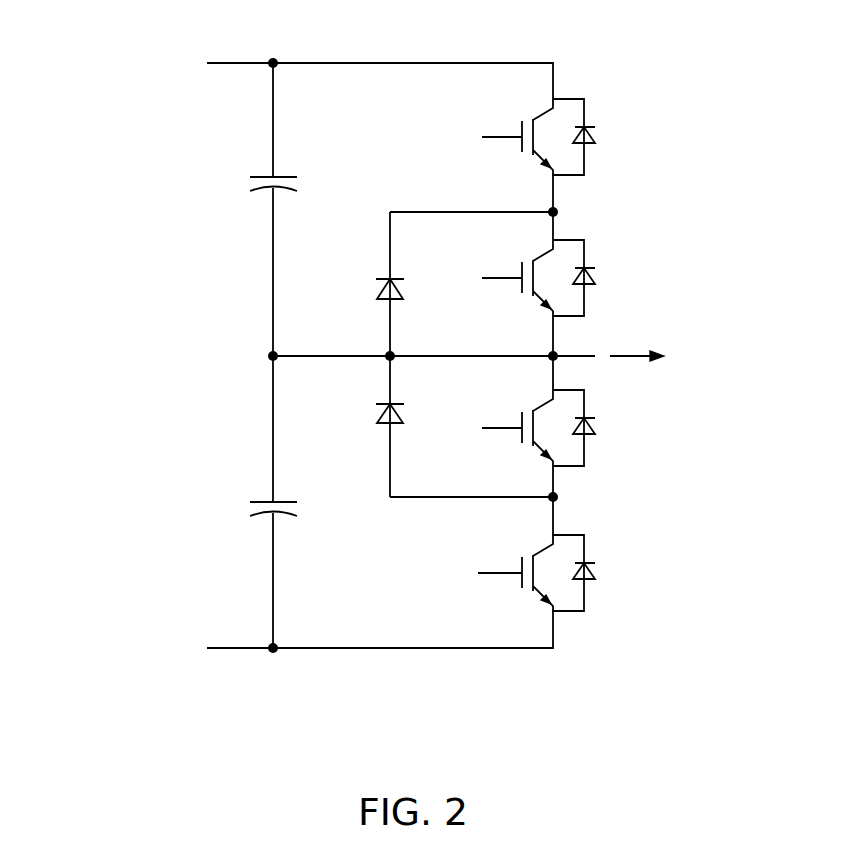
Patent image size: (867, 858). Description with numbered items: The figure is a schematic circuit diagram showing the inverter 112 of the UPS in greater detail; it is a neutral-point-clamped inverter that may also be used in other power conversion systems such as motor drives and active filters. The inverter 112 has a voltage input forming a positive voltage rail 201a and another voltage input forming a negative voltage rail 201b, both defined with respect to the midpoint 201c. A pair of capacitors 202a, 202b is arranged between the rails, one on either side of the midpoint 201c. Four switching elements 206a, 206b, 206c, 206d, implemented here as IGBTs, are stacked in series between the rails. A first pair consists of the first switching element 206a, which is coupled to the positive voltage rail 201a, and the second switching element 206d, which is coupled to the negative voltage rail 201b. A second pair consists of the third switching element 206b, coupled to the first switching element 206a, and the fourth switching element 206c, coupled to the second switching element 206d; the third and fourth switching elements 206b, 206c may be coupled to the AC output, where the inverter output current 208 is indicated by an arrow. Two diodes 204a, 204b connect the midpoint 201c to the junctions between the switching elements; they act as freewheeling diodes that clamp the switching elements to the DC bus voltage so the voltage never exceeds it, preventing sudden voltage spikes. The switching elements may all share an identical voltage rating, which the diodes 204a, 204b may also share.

The inverter 112 is at (144, 166).
The positive voltage rail 201a is at (435, 62).
The negative voltage rail 201b is at (434, 650).
The midpoint 201c is at (220, 346).
The capacitor 202a is at (264, 177).
The capacitor 202b is at (264, 502).
The diode 204a is at (378, 291).
The diode 204b is at (378, 412).
The first switching element 206a is at (597, 139).
The third switching element 206b is at (597, 280).
The fourth switching element 206c is at (597, 430).
The second switching element 206d is at (597, 575).
The inverter output current 208 is at (697, 337).